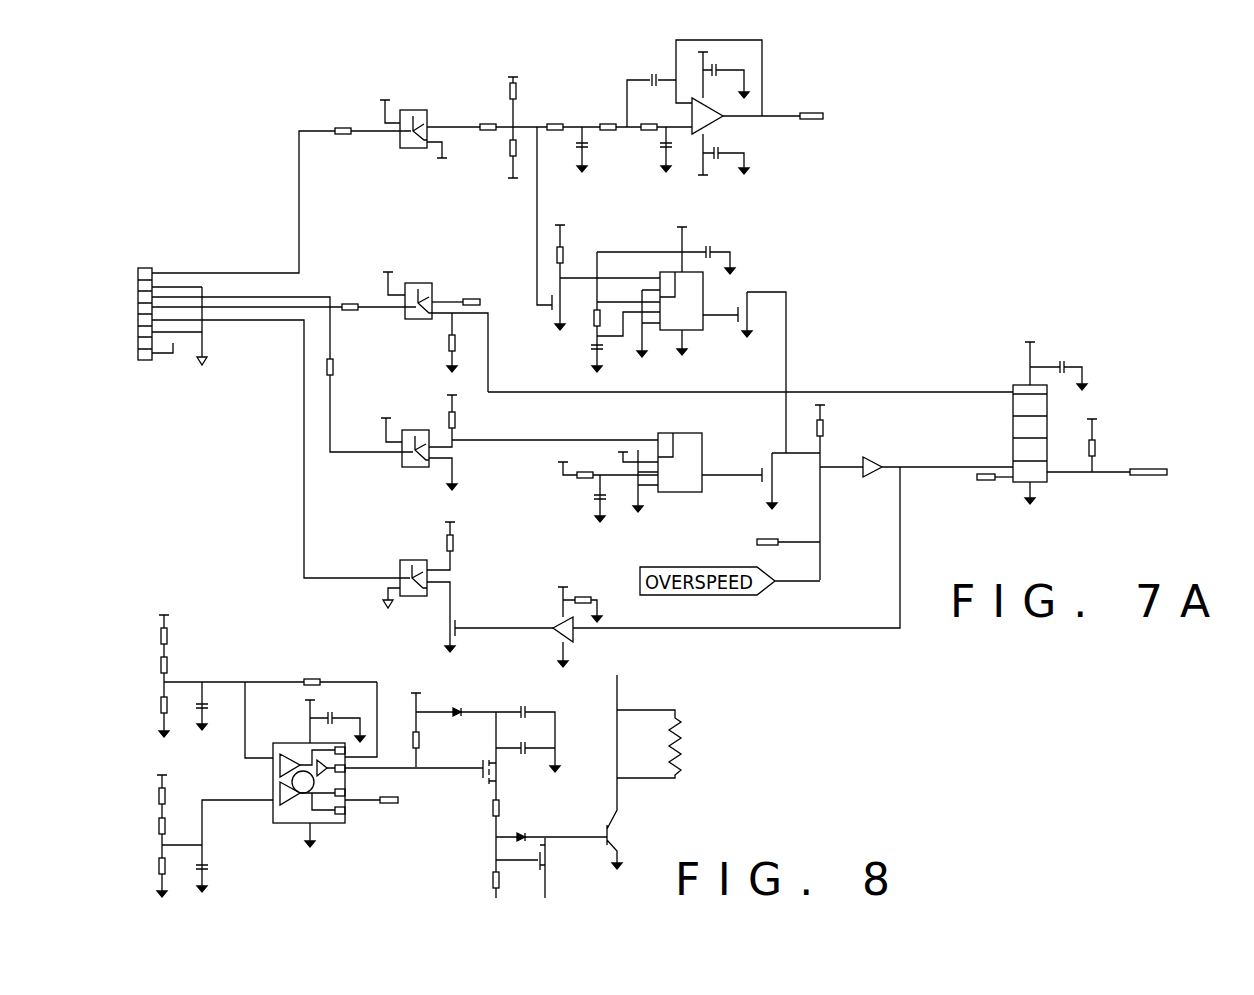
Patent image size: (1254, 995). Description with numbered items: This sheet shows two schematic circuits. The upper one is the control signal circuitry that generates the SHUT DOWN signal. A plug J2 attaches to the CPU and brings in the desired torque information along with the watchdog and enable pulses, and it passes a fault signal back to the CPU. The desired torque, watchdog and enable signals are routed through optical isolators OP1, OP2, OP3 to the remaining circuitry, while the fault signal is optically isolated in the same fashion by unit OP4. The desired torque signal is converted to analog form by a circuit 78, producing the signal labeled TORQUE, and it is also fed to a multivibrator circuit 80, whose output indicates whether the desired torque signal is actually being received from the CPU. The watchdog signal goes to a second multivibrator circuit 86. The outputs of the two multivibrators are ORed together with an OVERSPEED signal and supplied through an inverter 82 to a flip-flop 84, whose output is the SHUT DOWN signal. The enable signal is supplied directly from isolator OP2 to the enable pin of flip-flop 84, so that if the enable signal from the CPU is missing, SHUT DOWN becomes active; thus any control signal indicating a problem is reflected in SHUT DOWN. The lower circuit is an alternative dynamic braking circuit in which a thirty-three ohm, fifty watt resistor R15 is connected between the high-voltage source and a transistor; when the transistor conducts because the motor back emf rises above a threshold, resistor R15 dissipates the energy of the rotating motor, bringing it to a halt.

In FIG. 7A, the circuit 78 is at (763, 157).
In FIG. 7A, the multivibrator circuit 80 is at (758, 275).
In FIG. 7A, the inverter 82 is at (878, 458).
In FIG. 7A, the flip-flop 84 is at (1047, 410).
In FIG. 7A, the multivibrator circuit 86 is at (708, 423).
In FIG. 7A, the plug J2 is at (148, 268).
In FIG. 7A, the optical isolator OP1 is at (423, 110).
In FIG. 7A, the optical isolator OP2 is at (433, 244).
In FIG. 7A, the optical isolator OP3 is at (425, 430).
In FIG. 7A, the optical isolator unit OP4 is at (420, 560).
In FIG. 8, the resistor R15 is at (678, 737).